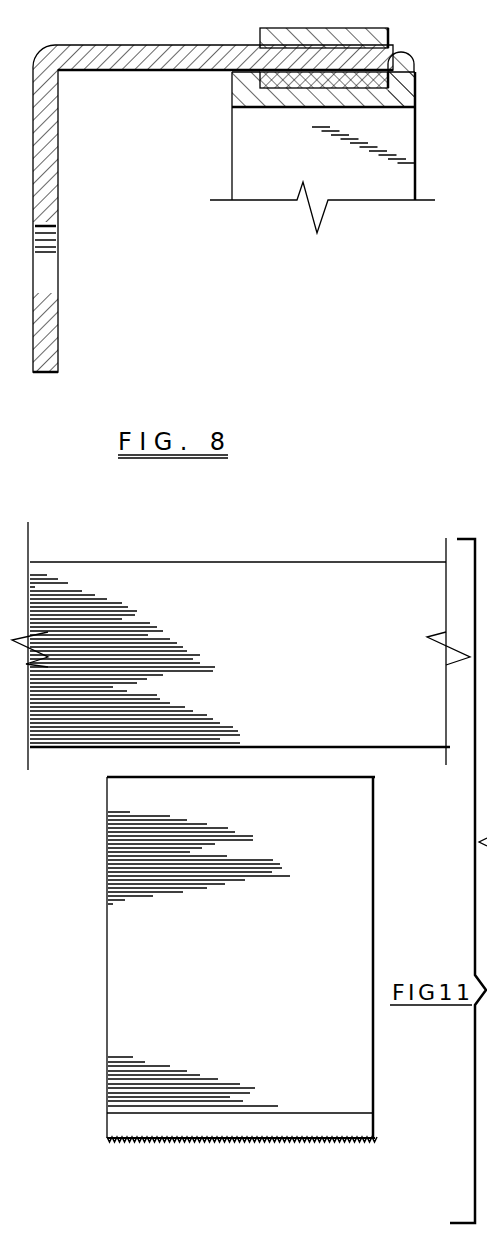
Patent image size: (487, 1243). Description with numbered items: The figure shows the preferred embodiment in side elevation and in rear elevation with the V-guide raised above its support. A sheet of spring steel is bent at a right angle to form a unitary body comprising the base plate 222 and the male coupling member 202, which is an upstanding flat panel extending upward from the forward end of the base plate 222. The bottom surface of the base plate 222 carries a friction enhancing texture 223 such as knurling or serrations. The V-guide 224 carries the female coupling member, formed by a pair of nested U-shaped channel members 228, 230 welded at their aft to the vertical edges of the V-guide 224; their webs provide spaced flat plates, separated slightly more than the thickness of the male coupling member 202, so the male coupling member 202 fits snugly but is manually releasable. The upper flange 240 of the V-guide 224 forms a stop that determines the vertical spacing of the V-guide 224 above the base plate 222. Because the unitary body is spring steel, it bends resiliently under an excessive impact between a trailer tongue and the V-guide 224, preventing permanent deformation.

In FIG. 8, the male coupling member 202 is at (162, 27).
In FIG. 11, the male coupling member 202 is at (354, 810).
In FIG. 8, the base plate 222 is at (118, 180).
In FIG. 11, the base plate 222 is at (304, 1125).
In FIG. 11, the friction enhancing texture 223 is at (208, 1145).
In FIG. 8, the V-guide 224 is at (338, 188).
In FIG. 11, the V-guide 224 is at (388, 544).
In FIG. 8, the U-shaped channel member 228 is at (270, 42).
In FIG. 8, the U-shaped channel member 230 is at (392, 62).
In FIG. 8, the upper flange 240 is at (460, 49).